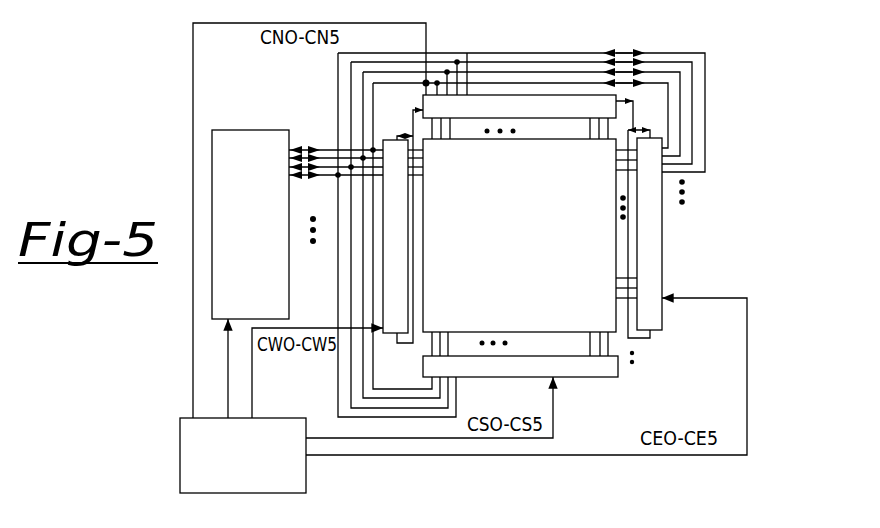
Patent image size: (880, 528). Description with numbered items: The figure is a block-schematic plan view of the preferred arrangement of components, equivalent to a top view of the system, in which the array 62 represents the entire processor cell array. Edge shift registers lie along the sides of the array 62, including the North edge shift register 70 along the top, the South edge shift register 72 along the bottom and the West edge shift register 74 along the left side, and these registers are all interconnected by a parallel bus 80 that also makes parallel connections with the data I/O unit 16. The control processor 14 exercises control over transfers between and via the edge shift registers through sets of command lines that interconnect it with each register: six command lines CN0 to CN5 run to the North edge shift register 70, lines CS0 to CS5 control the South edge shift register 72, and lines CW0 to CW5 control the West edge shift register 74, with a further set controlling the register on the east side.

The control processor 14 is at (306, 477).
The data I/O unit 16 is at (254, 251).
The array 62 is at (537, 230).
The North edge shift register 70 is at (613, 98).
The South edge shift register 72 is at (583, 368).
The West edge shift register 74 is at (398, 202).
The parallel bus 80 is at (507, 72).